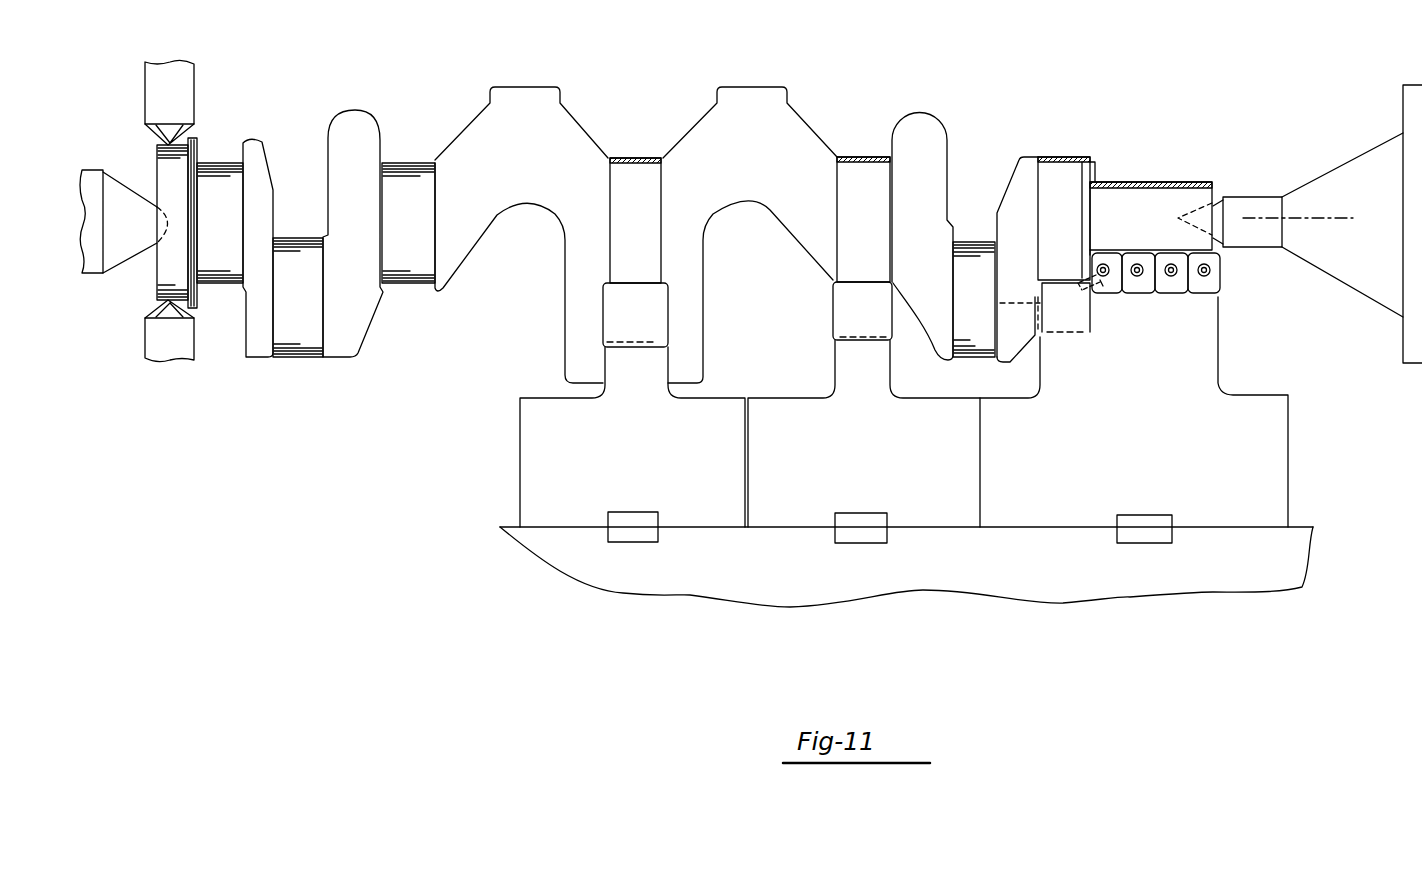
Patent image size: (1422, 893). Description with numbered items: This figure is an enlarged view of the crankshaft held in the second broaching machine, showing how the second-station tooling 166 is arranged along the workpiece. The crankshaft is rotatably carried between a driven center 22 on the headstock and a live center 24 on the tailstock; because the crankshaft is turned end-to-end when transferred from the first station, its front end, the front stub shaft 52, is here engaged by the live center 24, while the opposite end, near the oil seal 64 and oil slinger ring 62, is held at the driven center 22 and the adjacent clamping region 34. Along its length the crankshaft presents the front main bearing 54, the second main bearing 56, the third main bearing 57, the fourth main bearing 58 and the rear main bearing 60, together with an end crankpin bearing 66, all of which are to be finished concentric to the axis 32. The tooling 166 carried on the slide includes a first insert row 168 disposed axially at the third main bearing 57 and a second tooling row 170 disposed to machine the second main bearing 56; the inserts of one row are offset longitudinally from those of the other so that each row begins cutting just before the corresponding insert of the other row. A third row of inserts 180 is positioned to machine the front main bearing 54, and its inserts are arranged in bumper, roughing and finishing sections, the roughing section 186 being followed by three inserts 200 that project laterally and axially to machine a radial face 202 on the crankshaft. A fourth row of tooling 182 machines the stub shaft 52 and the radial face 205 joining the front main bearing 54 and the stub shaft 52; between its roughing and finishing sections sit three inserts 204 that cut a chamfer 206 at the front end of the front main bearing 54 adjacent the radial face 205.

The driven center 22 is at (128, 250).
The clamping jaws 34 is at (188, 345).
The oil seal 64 is at (157, 152).
The oil slinger ring 62 is at (195, 138).
The rear main bearing 60 is at (222, 165).
The end crankpin bearing 66 is at (293, 343).
The fourth main bearing 58 is at (405, 283).
The third main bearing 57 is at (630, 158).
The second main bearing 56 is at (862, 156).
The radial face 202 is at (967, 305).
The inserts 200 is at (1030, 337).
The roughing section 186 is at (1048, 280).
The front main bearing 54 is at (1057, 156).
The chamfer 206 is at (1095, 158).
The third row of inserts 180 is at (1090, 337).
The front stub shaft 52 is at (1135, 182).
The fourth row of tooling 182 is at (1220, 300).
The radial face 205 is at (1085, 268).
The inserts 204 is at (1102, 284).
The axis 32 is at (1328, 217).
The live center 24 is at (1333, 277).
The tooling 166 is at (788, 617).
The first insert row 168 is at (663, 405).
The second tooling row 170 is at (888, 405).